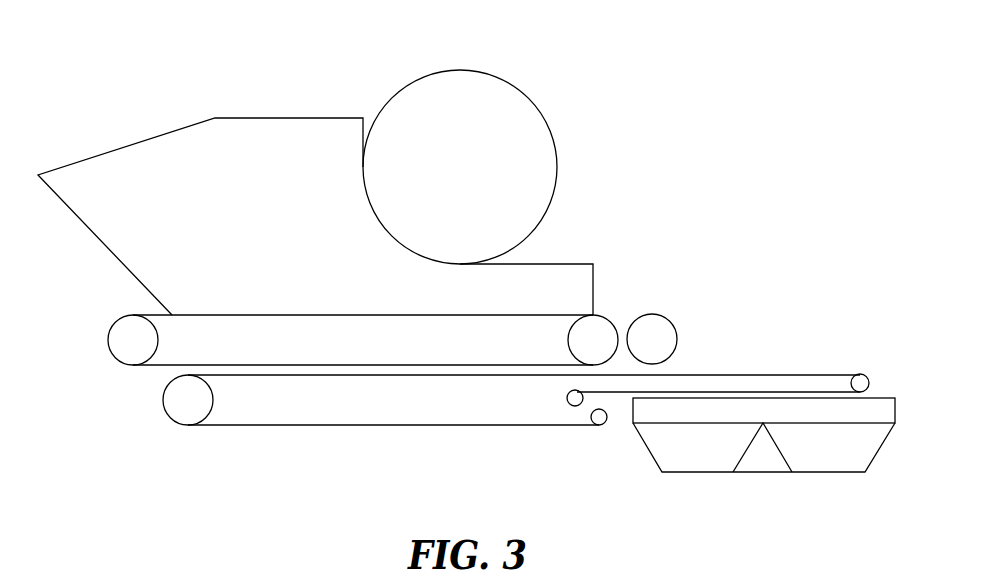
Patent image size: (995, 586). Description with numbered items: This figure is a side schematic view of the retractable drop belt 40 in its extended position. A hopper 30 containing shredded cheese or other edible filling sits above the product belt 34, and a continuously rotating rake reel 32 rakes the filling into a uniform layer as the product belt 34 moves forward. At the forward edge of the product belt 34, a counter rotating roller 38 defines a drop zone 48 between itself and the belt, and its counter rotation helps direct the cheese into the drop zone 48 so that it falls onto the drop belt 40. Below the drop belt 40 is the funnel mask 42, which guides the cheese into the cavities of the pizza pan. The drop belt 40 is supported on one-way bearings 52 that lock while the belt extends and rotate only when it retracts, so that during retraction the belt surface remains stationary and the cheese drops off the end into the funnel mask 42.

The hopper 30 is at (248, 140).
The rake reel 32 is at (512, 108).
The product belt 34 is at (277, 355).
The counter rotating roller 38 is at (655, 330).
The retractable drop belt 40 is at (437, 405).
The funnel mask 42 is at (692, 447).
The drop zone 48 is at (624, 310).
The one-way bearings 52 is at (572, 394).